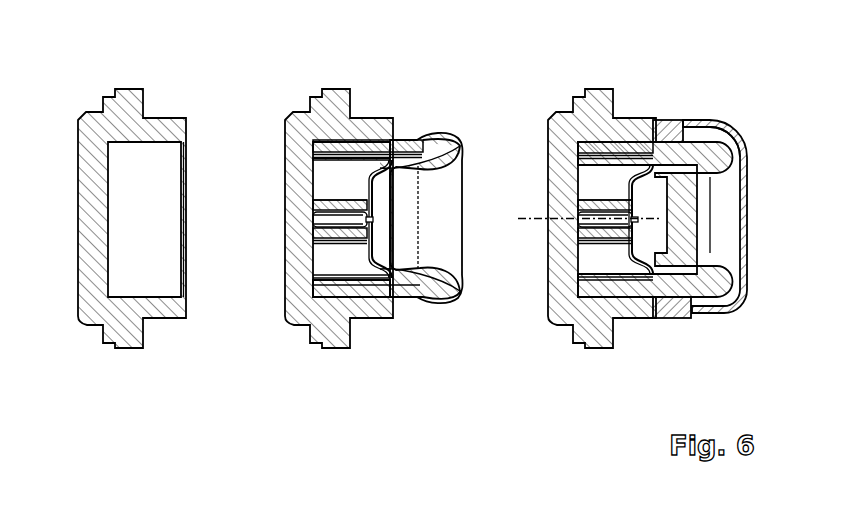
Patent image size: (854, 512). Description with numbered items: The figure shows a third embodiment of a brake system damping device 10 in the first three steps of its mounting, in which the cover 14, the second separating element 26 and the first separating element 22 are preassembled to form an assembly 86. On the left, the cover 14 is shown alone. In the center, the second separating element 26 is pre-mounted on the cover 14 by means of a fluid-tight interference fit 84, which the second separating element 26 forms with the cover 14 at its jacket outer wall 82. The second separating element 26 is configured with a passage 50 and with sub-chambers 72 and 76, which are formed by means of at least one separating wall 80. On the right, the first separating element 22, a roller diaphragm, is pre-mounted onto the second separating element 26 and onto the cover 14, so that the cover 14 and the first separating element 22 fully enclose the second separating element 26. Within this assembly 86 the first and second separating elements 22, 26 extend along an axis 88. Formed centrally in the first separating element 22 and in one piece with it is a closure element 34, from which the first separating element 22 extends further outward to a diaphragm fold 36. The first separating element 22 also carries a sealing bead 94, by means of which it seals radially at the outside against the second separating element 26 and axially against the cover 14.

The brake system damping device 10 is at (183, 79).
The cover 14 is at (103, 328).
The first separating element 22 is at (727, 123).
The second separating element 26 is at (440, 135).
The closure element 34 is at (690, 300).
The diaphragm fold 36 is at (744, 140).
The passage 50 is at (340, 222).
The sub-chamber 72 is at (342, 265).
The sub-chamber 76 is at (330, 183).
The separating wall 80 is at (333, 241).
The jacket outer wall 82 is at (417, 135).
The interference fit 84 is at (357, 137).
The assembly 86 is at (640, 356).
The axis 88 is at (537, 222).
The sealing bead 94 is at (666, 120).